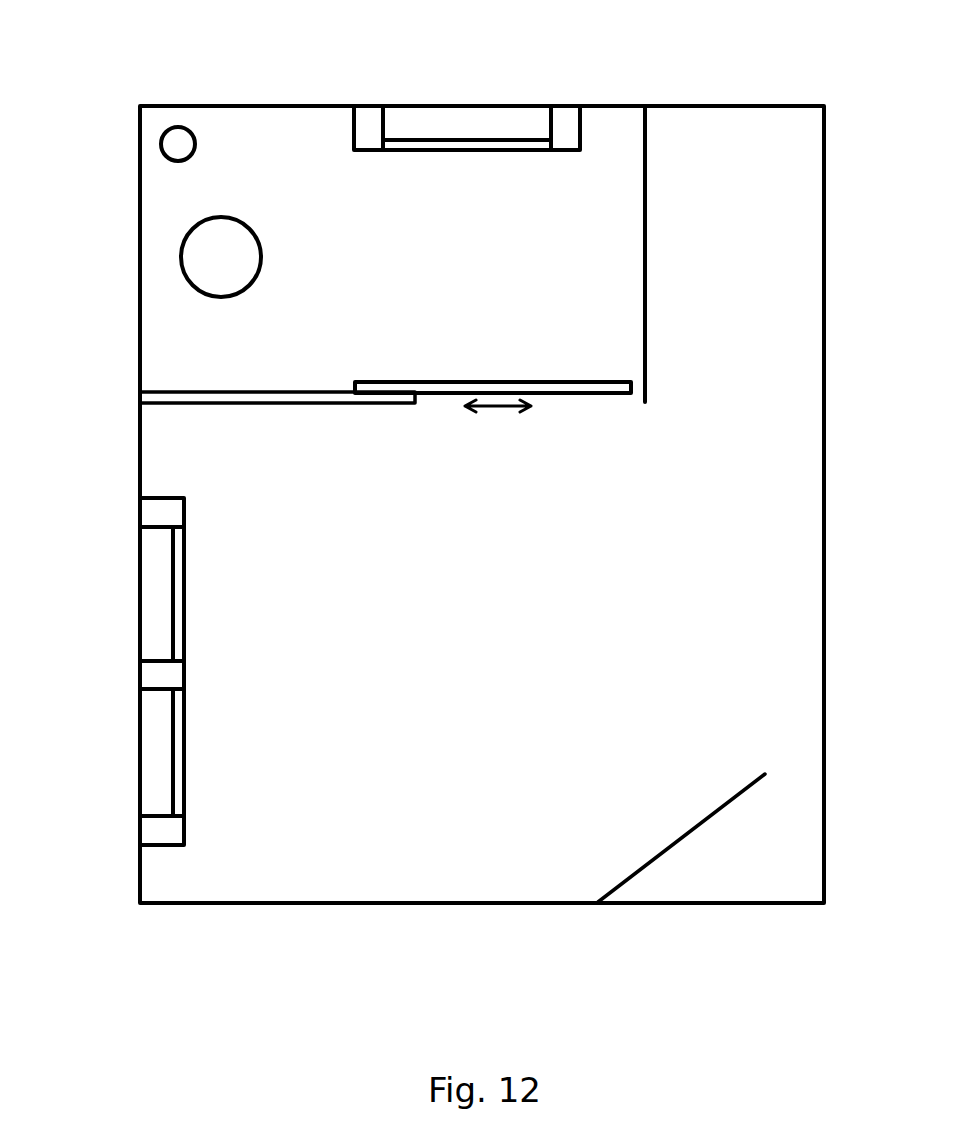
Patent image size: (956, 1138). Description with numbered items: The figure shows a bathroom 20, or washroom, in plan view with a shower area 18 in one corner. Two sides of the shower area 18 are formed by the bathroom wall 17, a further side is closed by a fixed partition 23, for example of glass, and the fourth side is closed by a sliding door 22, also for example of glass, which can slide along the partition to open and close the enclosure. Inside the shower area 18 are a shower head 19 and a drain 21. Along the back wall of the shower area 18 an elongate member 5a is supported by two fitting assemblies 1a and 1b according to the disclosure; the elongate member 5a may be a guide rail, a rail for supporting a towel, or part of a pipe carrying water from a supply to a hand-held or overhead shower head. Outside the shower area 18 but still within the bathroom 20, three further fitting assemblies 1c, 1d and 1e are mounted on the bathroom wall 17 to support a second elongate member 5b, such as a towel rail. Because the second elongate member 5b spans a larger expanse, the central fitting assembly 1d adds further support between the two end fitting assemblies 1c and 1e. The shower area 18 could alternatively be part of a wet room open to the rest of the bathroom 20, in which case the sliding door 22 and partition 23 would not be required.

The bathroom wall 17 is at (252, 106).
The shower area 18 is at (560, 258).
The shower head 19 is at (228, 218).
The bathroom 20 is at (328, 928).
The drain 21 is at (180, 127).
The sliding door 22 is at (392, 378).
The fixed partition 23 is at (646, 358).
The fitting assembly 1a is at (367, 127).
The fitting assembly 1b is at (565, 127).
The fitting assembly 1c is at (140, 508).
The central fitting assembly 1d is at (140, 678).
The fitting assembly 1e is at (140, 832).
The elongate member 5a is at (453, 138).
The second elongate member 5b is at (185, 575).